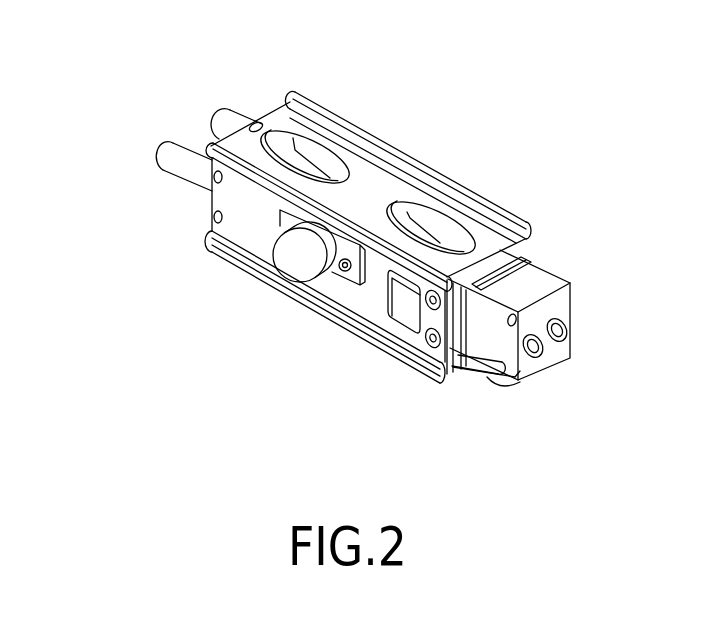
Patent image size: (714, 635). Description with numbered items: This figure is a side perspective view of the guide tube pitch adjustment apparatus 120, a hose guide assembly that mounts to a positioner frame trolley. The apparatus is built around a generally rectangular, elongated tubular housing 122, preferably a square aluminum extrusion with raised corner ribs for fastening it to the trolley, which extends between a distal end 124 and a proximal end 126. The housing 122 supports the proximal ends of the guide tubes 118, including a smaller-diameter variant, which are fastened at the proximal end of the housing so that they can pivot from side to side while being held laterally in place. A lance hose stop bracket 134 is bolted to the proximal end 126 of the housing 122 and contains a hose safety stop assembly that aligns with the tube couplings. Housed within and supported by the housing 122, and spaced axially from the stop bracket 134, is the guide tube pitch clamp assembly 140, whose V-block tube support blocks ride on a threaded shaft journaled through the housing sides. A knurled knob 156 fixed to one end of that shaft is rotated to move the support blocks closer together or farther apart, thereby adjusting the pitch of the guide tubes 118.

The guide tubes 118 is at (178, 171).
The guide tube pitch adjustment apparatus 120 is at (219, 298).
The tubular housing 122 is at (468, 193).
The distal end 124 is at (273, 112).
The proximal end 126 is at (528, 231).
The lance hose stop bracket 134 is at (572, 305).
The guide tube pitch clamp assembly 140 is at (333, 292).
The knurled knob 156 is at (302, 268).